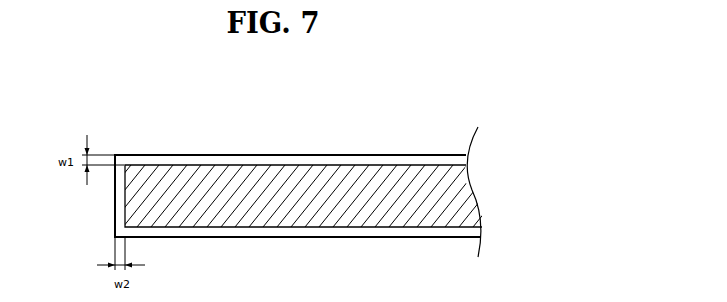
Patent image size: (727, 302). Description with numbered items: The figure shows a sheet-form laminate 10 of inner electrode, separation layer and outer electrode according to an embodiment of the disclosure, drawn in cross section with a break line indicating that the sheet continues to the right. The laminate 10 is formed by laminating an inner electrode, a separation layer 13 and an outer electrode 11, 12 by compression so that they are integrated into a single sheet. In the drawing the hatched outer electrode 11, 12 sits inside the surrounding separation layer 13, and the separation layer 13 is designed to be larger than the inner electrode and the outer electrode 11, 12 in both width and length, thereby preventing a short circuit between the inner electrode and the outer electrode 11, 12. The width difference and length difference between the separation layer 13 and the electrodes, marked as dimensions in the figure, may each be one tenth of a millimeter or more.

The sheet-form laminate 10 is at (281, 176).
The outer electrode 11 is at (253, 175).
The outer electrode 12 is at (281, 178).
The separation layer 13 is at (218, 160).